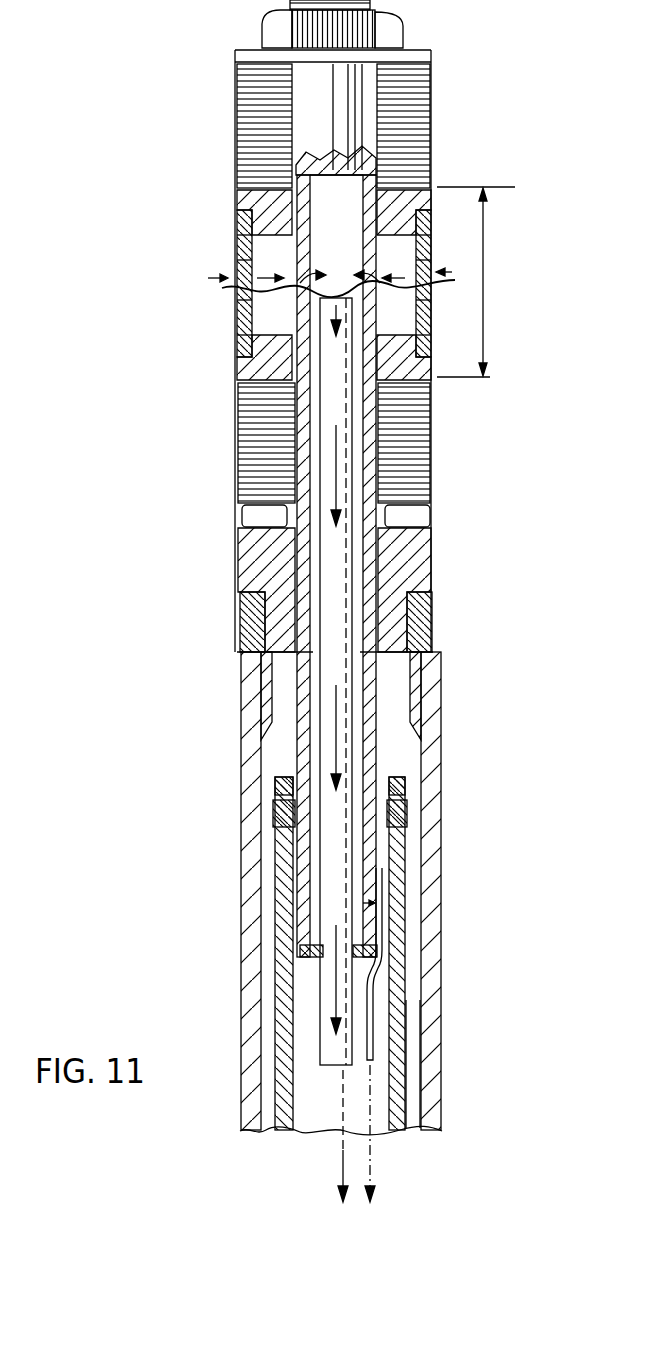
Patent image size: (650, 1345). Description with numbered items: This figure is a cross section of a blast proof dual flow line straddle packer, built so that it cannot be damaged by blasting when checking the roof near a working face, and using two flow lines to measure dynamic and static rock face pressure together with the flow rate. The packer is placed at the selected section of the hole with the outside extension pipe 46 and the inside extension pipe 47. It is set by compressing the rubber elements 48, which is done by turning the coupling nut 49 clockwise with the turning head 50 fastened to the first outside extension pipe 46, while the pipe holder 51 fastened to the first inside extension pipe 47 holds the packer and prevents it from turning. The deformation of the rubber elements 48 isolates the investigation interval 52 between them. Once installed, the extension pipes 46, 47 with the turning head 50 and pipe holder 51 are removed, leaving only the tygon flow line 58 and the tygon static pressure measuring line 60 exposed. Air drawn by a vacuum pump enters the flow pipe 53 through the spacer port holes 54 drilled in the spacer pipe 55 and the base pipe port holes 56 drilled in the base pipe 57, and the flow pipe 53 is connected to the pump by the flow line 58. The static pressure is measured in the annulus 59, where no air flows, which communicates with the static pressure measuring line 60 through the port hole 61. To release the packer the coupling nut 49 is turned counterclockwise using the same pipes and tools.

The outside extension pipe 46 is at (242, 805).
The inside extension pipe 47 is at (413, 1058).
The rubber elements 48 is at (236, 95).
The coupling nut 49 is at (240, 577).
The turning head 50 is at (240, 617).
The pipe holder 51 is at (275, 887).
The investigation interval 52 is at (480, 282).
The flow pipe 53 is at (355, 523).
The spacer port holes 54 is at (236, 240).
The spacer pipe 55 is at (236, 267).
The base pipe port holes 56 is at (297, 323).
The base pipe 57 is at (348, 96).
The tygon flow line 58 is at (343, 1153).
The annulus 59 is at (358, 740).
The tygon static pressure measuring line 60 is at (370, 1153).
The port hole 61 is at (377, 910).